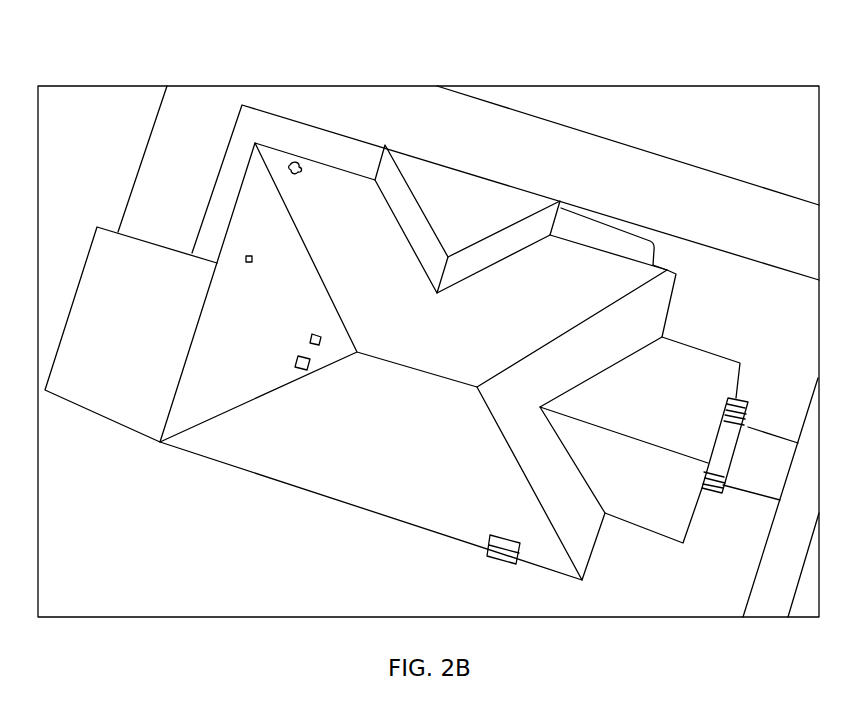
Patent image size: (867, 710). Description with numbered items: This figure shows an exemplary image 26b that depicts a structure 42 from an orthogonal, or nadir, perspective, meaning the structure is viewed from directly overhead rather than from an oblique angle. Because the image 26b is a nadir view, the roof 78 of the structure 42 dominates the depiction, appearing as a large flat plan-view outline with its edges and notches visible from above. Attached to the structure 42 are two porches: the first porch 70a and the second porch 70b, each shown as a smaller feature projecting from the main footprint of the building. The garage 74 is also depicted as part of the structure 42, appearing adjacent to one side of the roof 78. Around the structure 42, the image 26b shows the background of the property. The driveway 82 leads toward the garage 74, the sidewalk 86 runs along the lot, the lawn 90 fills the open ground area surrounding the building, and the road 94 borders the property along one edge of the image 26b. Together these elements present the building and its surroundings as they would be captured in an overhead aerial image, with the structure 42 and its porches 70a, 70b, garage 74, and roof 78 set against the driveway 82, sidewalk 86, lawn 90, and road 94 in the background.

The image 26b is at (613, 59).
The structure 42 is at (674, 310).
The first porch 70a is at (739, 397).
The second porch 70b is at (508, 181).
The garage 74 is at (92, 412).
The roof 78 is at (409, 453).
The driveway 82 is at (139, 166).
The sidewalk 86 is at (755, 496).
The lawn 90 is at (257, 547).
The road 94 is at (705, 172).